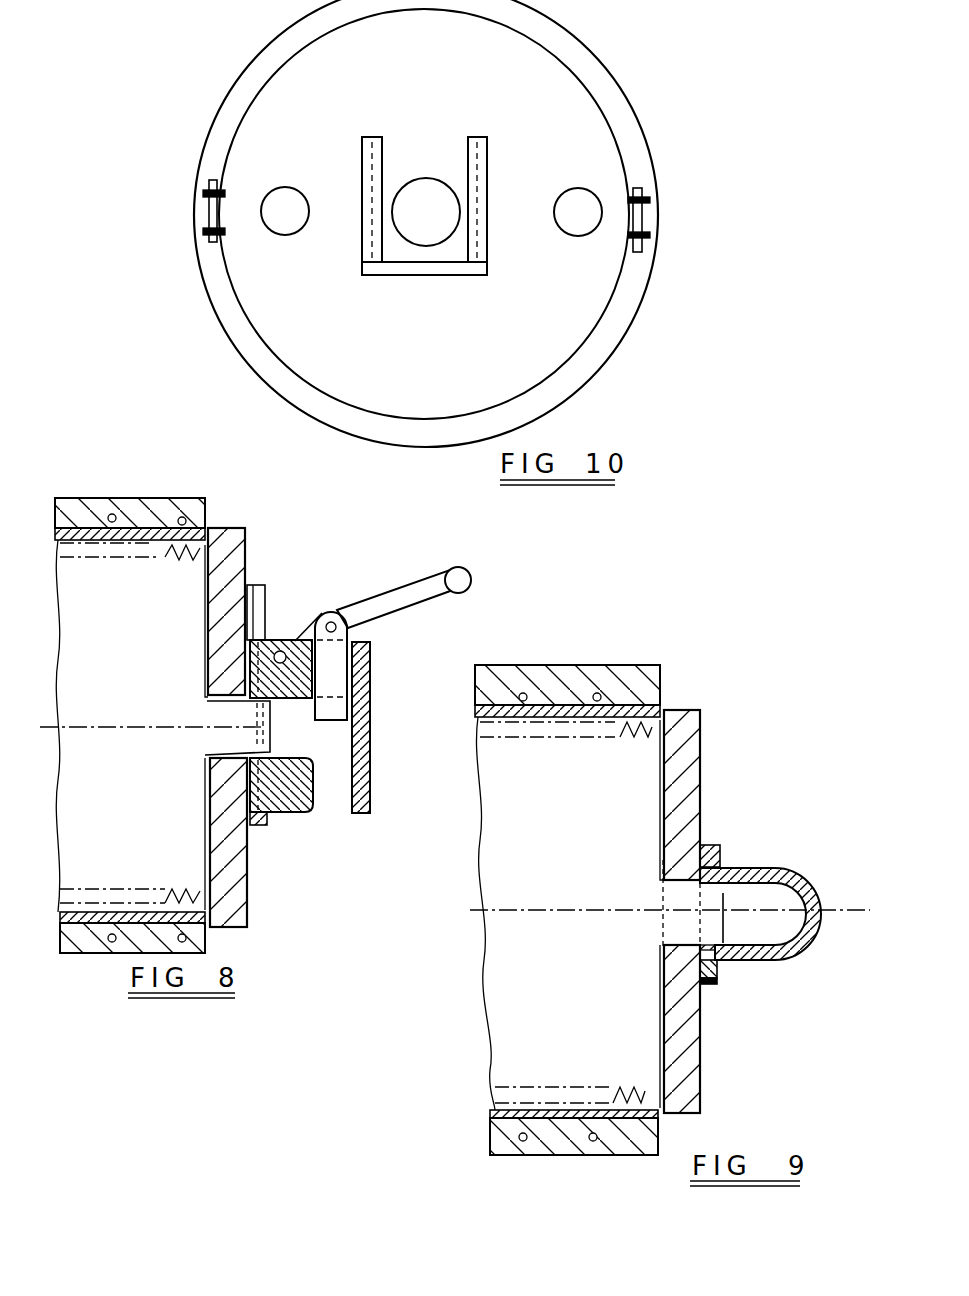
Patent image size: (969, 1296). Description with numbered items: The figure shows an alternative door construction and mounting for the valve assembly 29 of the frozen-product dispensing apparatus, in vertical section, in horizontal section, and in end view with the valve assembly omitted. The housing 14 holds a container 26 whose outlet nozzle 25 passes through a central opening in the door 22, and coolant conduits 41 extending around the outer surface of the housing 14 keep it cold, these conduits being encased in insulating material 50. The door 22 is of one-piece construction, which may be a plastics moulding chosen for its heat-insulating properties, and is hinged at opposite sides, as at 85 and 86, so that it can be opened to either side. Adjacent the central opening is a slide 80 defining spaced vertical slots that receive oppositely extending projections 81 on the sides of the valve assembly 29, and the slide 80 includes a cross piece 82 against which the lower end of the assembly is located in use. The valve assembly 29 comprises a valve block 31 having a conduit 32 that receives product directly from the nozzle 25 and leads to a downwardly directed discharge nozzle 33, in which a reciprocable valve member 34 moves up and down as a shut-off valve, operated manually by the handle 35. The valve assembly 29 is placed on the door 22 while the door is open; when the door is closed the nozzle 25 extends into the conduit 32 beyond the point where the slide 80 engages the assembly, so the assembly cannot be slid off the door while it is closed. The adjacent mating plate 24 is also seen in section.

In FIG. 8, the housing 14 is at (94, 538).
In FIG. 10, the door 22 is at (424, 214).
In FIG. 8, the door 22 is at (233, 872).
In FIG. 9, the door 22 is at (680, 1043).
In FIG. 8, the flange plate (mating) 24 is at (205, 820).
In FIG. 9, the flange plate (mating) 24 is at (655, 1012).
In FIG. 10, the outlet nozzle 25 is at (427, 178).
In FIG. 8, the outlet nozzle 25 is at (232, 693).
In FIG. 9, the outlet nozzle 25 is at (680, 893).
In FIG. 8, the container 26 is at (183, 560).
In FIG. 8, the valve assembly 29 is at (374, 825).
In FIG. 9, the valve assembly 29 is at (870, 911).
In FIG. 10, the valve block 31 is at (285, 187).
In FIG. 8, the conduit 32 is at (295, 725).
In FIG. 8, the discharge nozzle 33 is at (331, 795).
In FIG. 9, the discharge nozzle 33 is at (790, 925).
In FIG. 8, the valve member 34 is at (337, 672).
In FIG. 8, the handle 35 is at (415, 585).
In FIG. 8, the conduits 41 is at (182, 519).
In FIG. 9, the conduits 41 is at (597, 697).
In FIG. 10, the insulating material 50 is at (580, 372).
In FIG. 8, the insulating material 50 is at (205, 512).
In FIG. 9, the insulating material 50 is at (660, 682).
In FIG. 10, the slide 80 is at (478, 137).
In FIG. 8, the slide 80 is at (266, 600).
In FIG. 9, the slide 80 is at (713, 845).
In FIG. 9, the projections 81 is at (718, 968).
In FIG. 10, the cross piece 82 is at (460, 275).
In FIG. 8, the cross piece 82 is at (263, 825).
In FIG. 9, the cross piece 82 is at (705, 985).
In FIG. 10, the hinge 85 is at (209, 217).
In FIG. 10, the hinge 86 is at (643, 221).